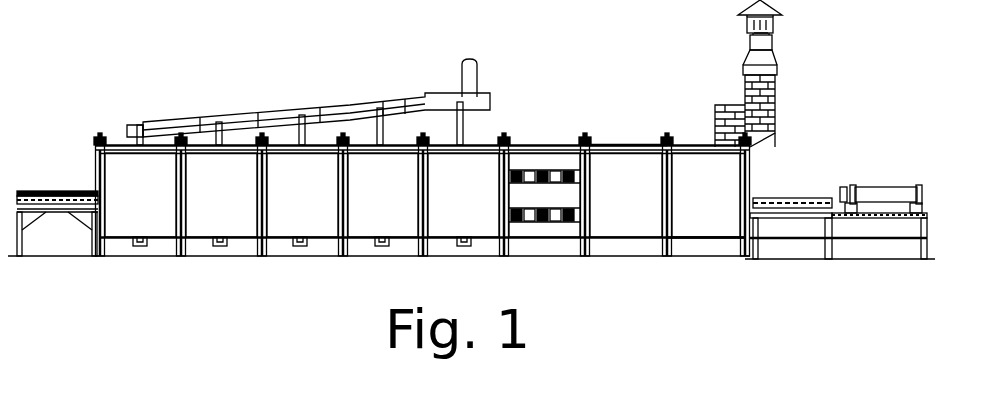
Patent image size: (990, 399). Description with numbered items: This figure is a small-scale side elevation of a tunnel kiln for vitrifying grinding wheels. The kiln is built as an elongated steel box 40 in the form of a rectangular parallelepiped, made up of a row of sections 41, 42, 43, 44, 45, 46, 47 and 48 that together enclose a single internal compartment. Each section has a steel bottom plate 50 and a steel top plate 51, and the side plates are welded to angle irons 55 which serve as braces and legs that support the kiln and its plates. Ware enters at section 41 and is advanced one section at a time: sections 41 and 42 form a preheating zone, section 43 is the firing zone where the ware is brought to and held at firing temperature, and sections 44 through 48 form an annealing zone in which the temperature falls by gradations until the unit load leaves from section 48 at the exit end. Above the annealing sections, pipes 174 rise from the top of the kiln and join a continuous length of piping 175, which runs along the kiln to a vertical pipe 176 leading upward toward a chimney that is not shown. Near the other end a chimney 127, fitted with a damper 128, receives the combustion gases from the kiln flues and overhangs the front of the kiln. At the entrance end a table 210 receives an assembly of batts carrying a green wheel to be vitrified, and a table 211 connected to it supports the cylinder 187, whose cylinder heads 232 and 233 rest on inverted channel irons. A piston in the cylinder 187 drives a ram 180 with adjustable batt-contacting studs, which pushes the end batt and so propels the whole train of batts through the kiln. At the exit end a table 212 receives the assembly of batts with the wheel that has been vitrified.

The steel box 40 is at (533, 145).
The section 41 is at (720, 233).
The section 42 is at (635, 232).
The section 43 is at (560, 233).
The section 44 is at (483, 231).
The section 45 is at (403, 231).
The section 46 is at (318, 231).
The section 47 is at (238, 230).
The section 48 is at (155, 230).
The bottom plate 50 is at (688, 242).
The top plate 51 is at (598, 143).
The angle irons 55 is at (266, 201).
The chimney 127 is at (770, 30).
The damper 128 is at (728, 105).
The pipes 174 is at (133, 135).
The continuous length of piping 175 is at (233, 117).
The vertical pipe 176 is at (473, 80).
The ram 180 is at (843, 187).
The cylinder 187 is at (878, 192).
The table 210 is at (790, 196).
The table 211 is at (873, 227).
The table 212 is at (43, 190).
The cylinder head 232 is at (851, 204).
The cylinder head 233 is at (917, 201).